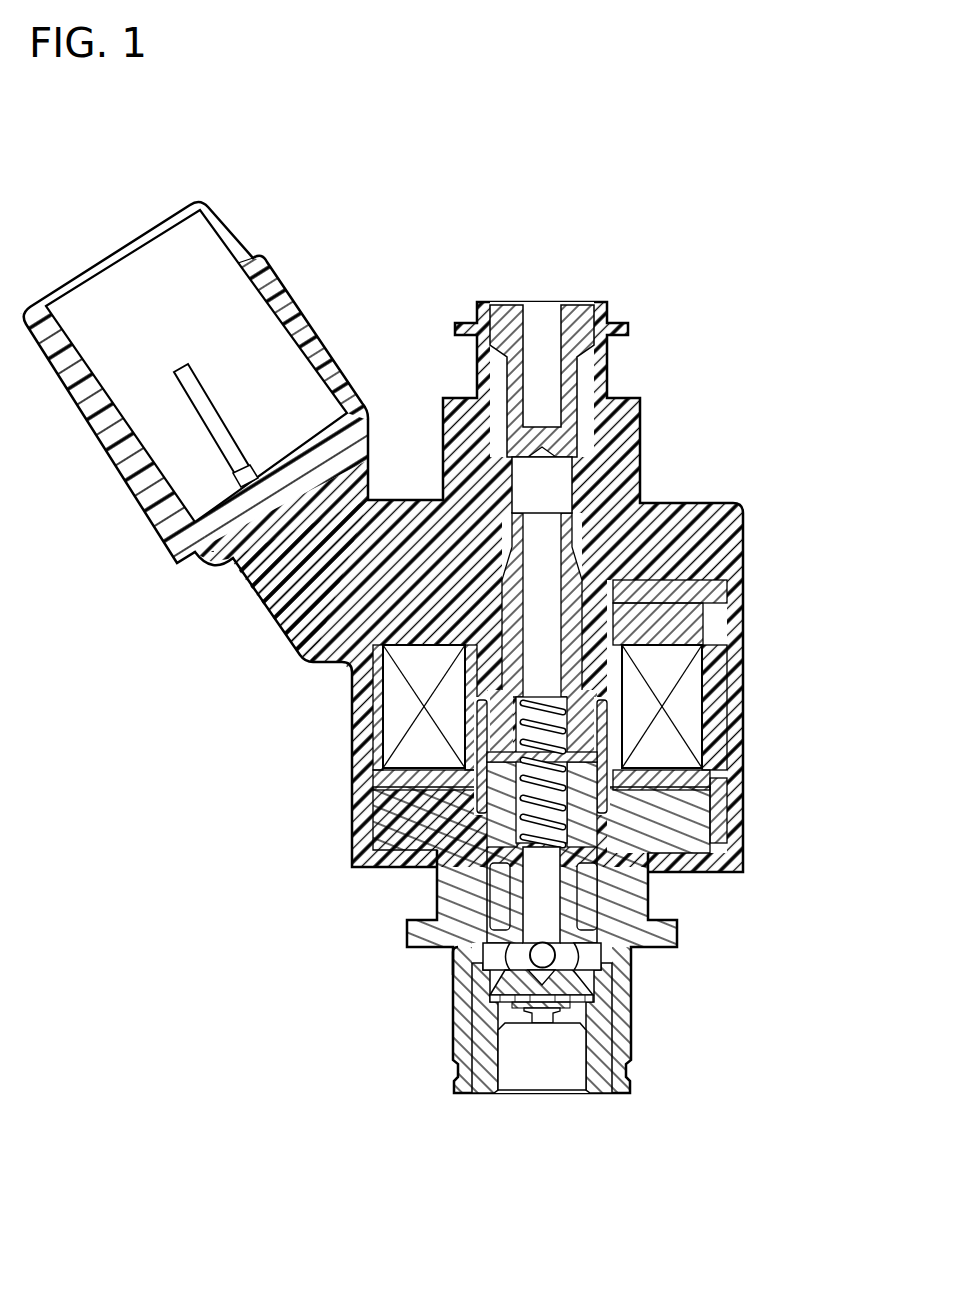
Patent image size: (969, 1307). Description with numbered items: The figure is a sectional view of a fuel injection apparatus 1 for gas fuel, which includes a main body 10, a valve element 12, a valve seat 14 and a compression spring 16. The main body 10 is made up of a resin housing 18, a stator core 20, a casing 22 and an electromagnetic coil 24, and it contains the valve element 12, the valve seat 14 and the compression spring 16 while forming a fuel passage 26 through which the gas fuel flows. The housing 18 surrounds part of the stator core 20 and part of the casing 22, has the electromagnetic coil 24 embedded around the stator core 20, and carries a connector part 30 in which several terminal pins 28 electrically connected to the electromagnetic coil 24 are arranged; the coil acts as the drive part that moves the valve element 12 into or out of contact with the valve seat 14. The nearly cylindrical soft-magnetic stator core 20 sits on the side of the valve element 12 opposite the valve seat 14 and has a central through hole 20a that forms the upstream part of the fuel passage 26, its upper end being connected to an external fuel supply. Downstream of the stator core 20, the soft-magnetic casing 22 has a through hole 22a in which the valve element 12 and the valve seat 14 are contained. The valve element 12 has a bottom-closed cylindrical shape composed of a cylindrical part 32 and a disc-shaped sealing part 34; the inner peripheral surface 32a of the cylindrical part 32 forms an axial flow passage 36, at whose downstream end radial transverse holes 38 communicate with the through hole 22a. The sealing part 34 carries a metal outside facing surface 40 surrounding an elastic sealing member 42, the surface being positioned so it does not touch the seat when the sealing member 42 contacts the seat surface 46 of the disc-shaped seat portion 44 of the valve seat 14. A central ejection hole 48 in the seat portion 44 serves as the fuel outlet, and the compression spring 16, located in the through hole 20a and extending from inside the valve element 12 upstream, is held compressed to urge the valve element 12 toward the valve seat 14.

The fuel injection apparatus 1 is at (392, 610).
The main body 10 is at (383, 537).
The valve element 12 is at (482, 852).
The valve seat 14 is at (623, 1075).
The compression spring 16 is at (636, 671).
The housing 18 is at (692, 512).
The stator core 20 is at (615, 357).
The through hole 20a is at (565, 475).
The casing 22 is at (430, 898).
The through hole 22a is at (455, 963).
The electromagnetic coil 24 is at (392, 708).
The fuel passage 26 is at (554, 502).
The terminal pins 28 is at (194, 390).
The connector part 30 is at (272, 266).
The cylindrical part 32 is at (480, 810).
The inner peripheral surface 32a is at (492, 955).
The sealing part 34 is at (592, 990).
The flow passage 36 is at (556, 922).
The transverse holes 38 is at (580, 955).
The outside facing surface 40 is at (476, 1062).
The sealing member 42 is at (544, 1024).
The seat portion 44 is at (590, 1012).
The seat surface 46 is at (600, 999).
The ejection hole 48 is at (558, 1018).